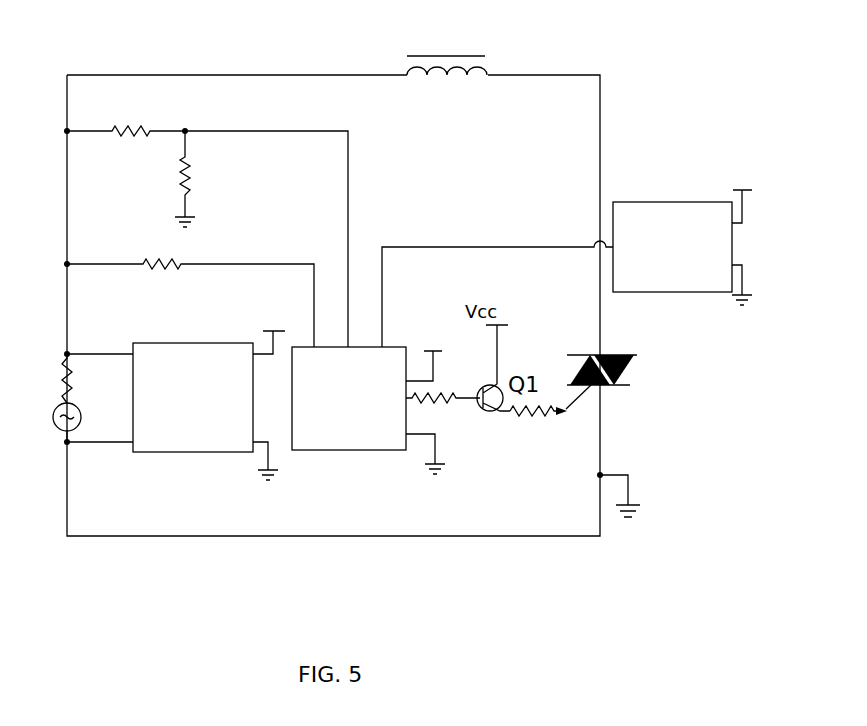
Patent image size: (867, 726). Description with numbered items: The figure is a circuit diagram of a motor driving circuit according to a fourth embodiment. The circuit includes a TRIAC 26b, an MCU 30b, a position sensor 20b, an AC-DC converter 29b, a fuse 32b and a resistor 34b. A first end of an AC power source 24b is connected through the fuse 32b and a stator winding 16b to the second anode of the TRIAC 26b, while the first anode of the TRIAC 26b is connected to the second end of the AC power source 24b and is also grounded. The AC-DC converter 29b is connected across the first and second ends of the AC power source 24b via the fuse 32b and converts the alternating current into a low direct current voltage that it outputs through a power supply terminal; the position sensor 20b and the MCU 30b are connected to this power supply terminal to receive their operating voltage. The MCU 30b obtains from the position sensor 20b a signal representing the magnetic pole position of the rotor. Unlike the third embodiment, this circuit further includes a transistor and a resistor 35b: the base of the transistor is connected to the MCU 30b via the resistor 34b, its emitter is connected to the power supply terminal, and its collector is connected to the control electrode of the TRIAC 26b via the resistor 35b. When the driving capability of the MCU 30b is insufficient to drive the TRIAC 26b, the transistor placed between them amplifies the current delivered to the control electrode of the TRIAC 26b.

The stator winding 16b is at (410, 73).
The position sensor 20b is at (698, 202).
The AC power source 24b is at (78, 424).
The TRIAC 26b is at (638, 370).
The AC-DC converter 29b is at (232, 452).
The MCU 30b is at (375, 450).
The fuse 32b is at (78, 378).
The resistor 34b is at (447, 400).
The resistor 35b is at (560, 414).